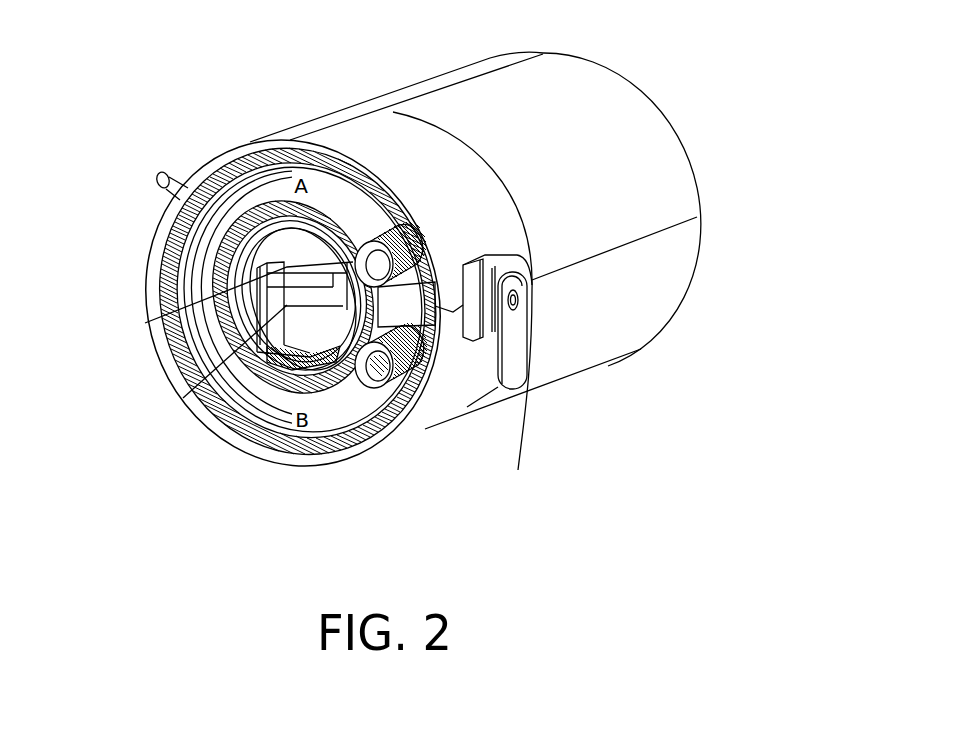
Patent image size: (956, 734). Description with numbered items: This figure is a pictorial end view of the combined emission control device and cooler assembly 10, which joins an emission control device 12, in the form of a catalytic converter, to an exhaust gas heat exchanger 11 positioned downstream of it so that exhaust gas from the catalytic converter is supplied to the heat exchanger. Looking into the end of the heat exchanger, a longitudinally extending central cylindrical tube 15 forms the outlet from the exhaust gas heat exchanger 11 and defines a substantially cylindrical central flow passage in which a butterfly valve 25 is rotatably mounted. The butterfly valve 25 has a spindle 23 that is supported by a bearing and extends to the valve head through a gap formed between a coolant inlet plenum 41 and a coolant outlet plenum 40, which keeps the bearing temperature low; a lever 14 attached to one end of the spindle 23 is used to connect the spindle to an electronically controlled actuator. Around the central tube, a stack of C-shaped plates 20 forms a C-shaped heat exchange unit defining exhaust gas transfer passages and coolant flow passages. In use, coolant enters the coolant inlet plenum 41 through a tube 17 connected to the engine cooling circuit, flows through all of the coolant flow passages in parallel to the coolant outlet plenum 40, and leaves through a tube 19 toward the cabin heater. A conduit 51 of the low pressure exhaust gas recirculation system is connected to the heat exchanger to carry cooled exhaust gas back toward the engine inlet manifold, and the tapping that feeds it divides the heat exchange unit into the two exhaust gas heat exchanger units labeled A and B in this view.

The combined emission control device and cooler assembly 10 is at (362, 104).
The exhaust gas heat exchanger 11 is at (250, 144).
The emission control device 12 is at (442, 82).
The lever 14 is at (521, 439).
The central cylindrical tube 15 is at (213, 255).
The tube 17 is at (192, 397).
The tube 19 is at (370, 393).
The C-shaped plates 20 is at (207, 168).
The spindle 23 is at (520, 296).
The butterfly valve 25 is at (160, 319).
The coolant outlet plenum 40 is at (527, 255).
The coolant inlet plenum 41 is at (488, 186).
The conduit 51 is at (157, 173).